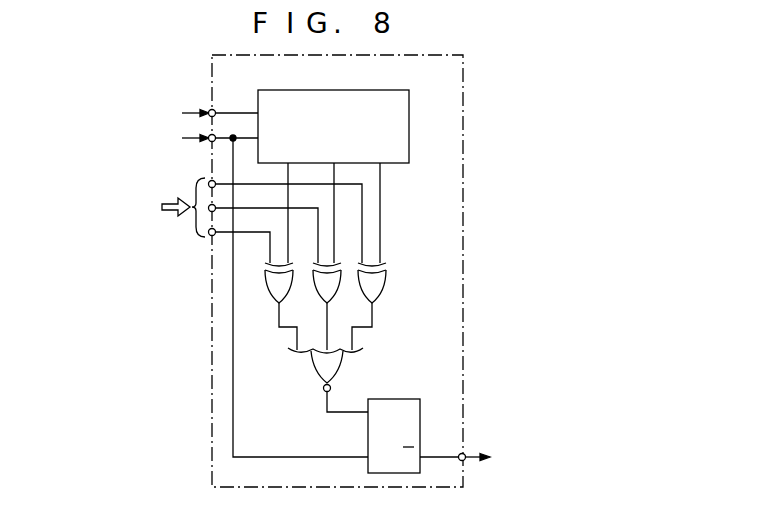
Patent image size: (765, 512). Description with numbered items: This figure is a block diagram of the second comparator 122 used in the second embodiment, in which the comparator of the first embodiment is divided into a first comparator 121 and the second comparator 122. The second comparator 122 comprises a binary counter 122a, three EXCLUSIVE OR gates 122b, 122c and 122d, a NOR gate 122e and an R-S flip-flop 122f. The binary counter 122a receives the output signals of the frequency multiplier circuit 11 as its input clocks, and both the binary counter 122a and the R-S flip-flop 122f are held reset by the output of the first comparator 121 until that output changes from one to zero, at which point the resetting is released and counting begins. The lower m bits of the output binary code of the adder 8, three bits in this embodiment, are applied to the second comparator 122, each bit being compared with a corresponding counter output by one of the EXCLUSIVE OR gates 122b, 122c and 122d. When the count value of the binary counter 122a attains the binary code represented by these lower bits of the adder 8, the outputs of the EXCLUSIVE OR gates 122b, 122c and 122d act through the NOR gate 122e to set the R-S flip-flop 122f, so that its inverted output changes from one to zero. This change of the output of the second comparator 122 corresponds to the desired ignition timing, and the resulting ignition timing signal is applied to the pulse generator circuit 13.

The adder 8 is at (207, 220).
The frequency multiplier circuit 11 is at (207, 113).
The pulse generator circuit 13 is at (469, 457).
The first comparator 121 is at (259, 292).
The second comparator 122 is at (465, 187).
The binary counter 122a is at (348, 90).
The EXCLUSIVE OR gate 122b is at (275, 300).
The EXCLUSIVE OR gate 122c is at (338, 293).
The EXCLUSIVE OR gate 122d is at (386, 279).
The NOR gate 122e is at (315, 376).
The R-S flip-flop 122f is at (390, 398).